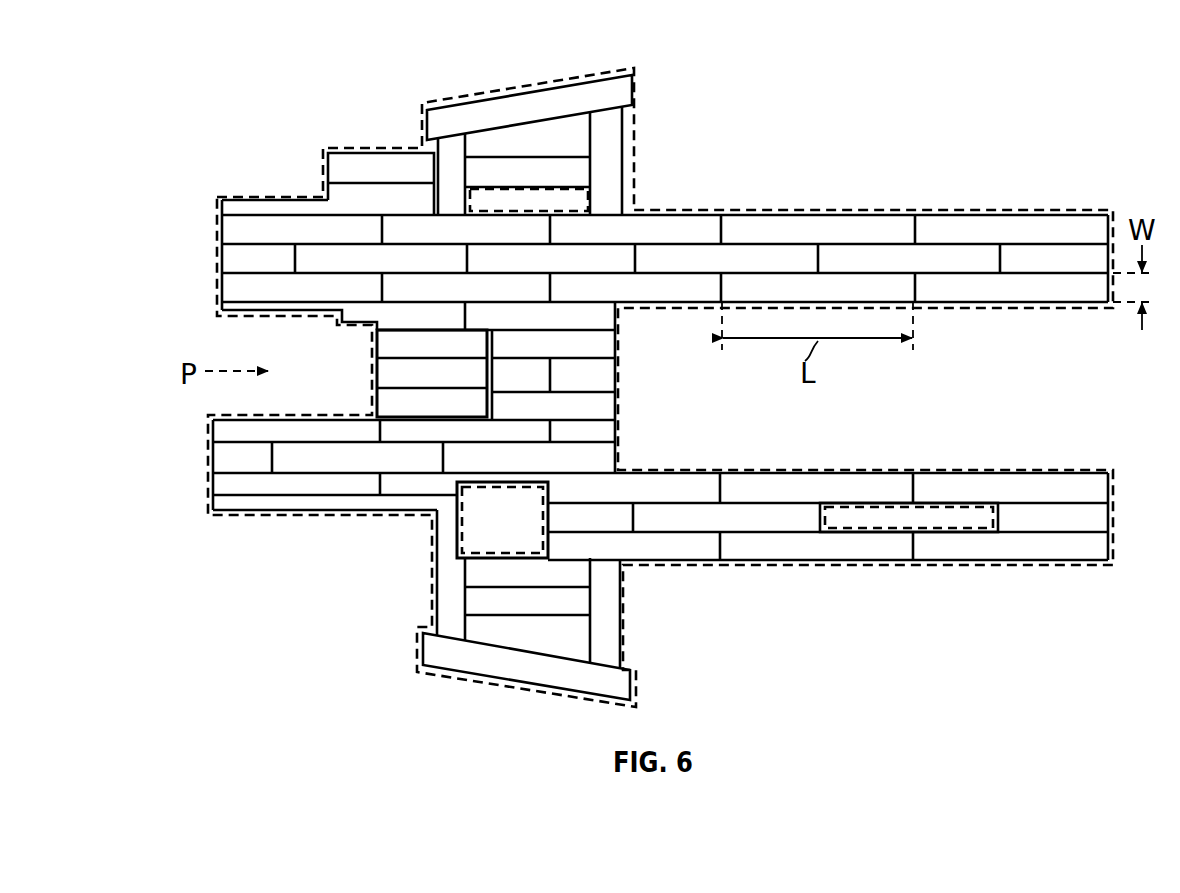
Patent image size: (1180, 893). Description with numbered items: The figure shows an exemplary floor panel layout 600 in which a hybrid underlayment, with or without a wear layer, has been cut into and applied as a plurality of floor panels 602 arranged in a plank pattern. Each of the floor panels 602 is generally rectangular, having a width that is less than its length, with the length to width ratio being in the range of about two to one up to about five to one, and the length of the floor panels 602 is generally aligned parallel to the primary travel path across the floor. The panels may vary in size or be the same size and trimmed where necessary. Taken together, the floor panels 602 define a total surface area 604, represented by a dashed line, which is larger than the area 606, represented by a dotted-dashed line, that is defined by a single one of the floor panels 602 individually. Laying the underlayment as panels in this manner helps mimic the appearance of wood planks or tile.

The floor panel layout 600 is at (651, 364).
The floor panels 602 is at (523, 112).
The total surface area 604 is at (270, 178).
The area 606 is at (938, 527).